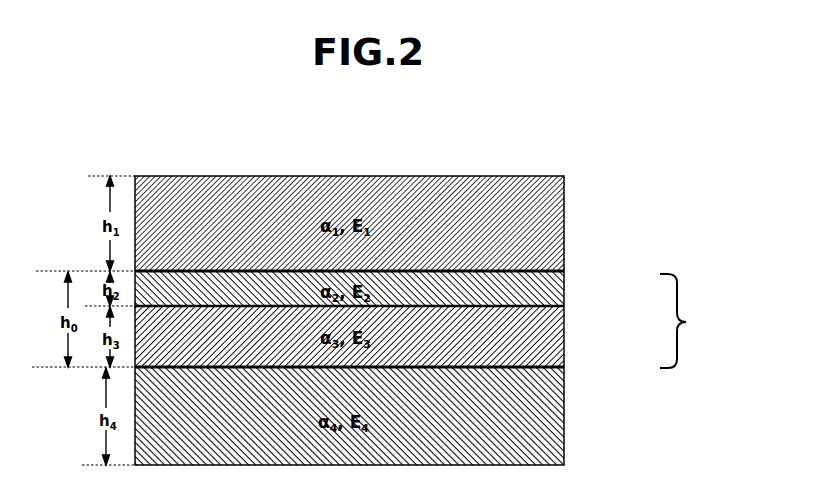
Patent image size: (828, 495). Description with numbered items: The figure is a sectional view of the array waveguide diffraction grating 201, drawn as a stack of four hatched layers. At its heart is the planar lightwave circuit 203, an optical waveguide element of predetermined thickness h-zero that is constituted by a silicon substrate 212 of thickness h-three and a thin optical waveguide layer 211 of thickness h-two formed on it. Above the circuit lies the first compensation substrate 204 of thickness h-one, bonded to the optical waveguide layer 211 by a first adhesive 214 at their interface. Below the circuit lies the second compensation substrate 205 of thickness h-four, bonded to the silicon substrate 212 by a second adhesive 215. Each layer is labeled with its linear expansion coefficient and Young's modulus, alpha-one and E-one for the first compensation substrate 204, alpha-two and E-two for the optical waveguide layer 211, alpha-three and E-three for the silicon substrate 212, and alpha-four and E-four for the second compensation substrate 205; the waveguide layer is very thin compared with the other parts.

The array waveguide diffraction grating 201 is at (457, 158).
The first compensation substrate 204 is at (564, 227).
The first adhesive 214 is at (565, 265).
The optical waveguide layer 211 is at (564, 293).
The silicon substrate 212 is at (564, 343).
The second adhesive 215 is at (564, 378).
The second compensation substrate 205 is at (564, 418).
The planar lightwave circuit 203 is at (702, 321).